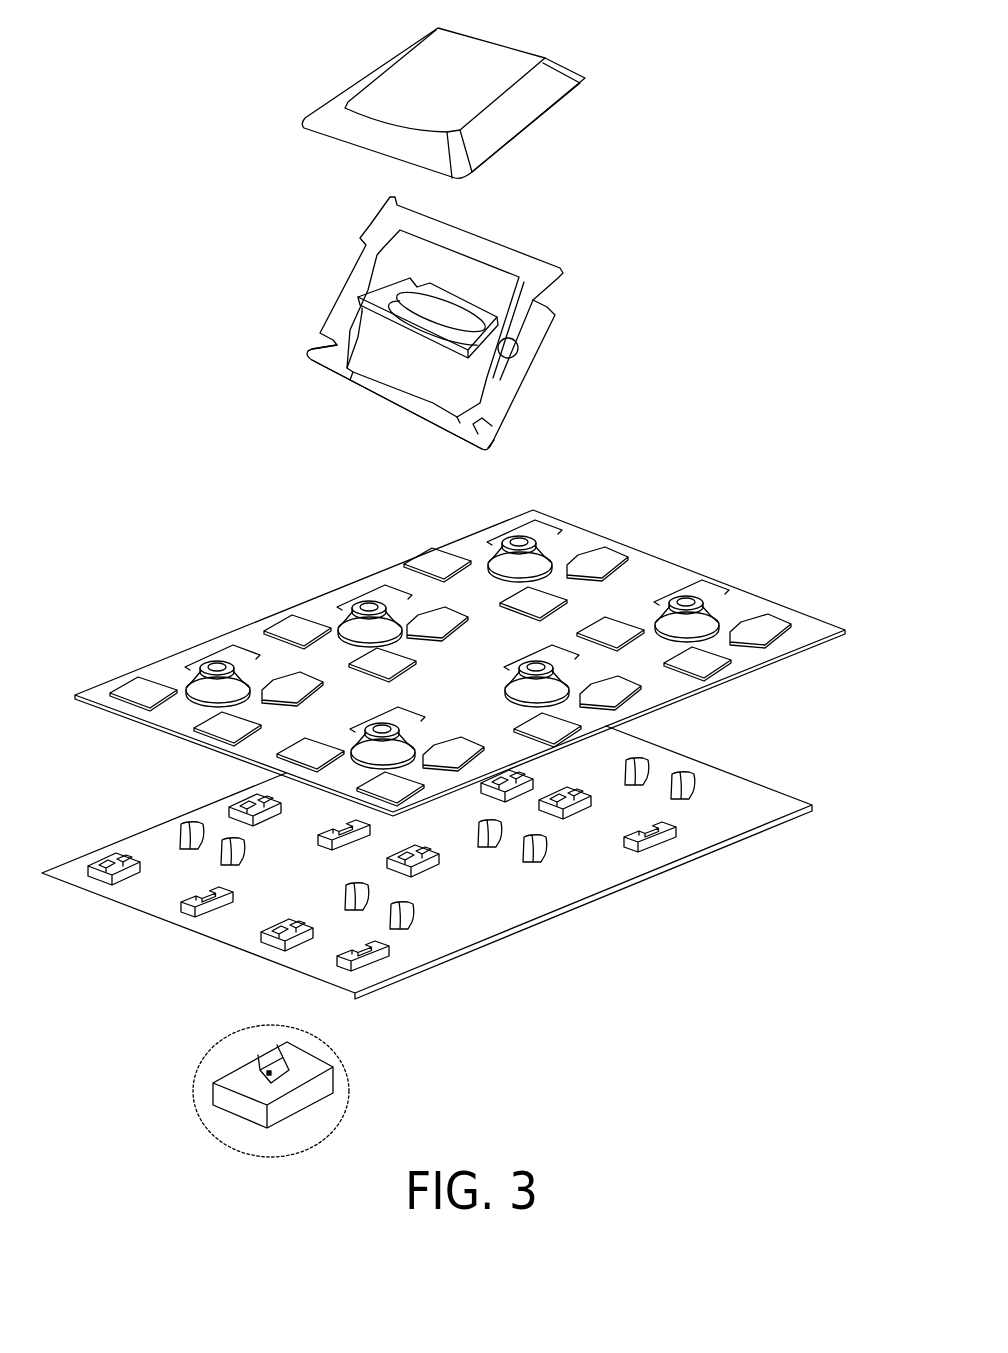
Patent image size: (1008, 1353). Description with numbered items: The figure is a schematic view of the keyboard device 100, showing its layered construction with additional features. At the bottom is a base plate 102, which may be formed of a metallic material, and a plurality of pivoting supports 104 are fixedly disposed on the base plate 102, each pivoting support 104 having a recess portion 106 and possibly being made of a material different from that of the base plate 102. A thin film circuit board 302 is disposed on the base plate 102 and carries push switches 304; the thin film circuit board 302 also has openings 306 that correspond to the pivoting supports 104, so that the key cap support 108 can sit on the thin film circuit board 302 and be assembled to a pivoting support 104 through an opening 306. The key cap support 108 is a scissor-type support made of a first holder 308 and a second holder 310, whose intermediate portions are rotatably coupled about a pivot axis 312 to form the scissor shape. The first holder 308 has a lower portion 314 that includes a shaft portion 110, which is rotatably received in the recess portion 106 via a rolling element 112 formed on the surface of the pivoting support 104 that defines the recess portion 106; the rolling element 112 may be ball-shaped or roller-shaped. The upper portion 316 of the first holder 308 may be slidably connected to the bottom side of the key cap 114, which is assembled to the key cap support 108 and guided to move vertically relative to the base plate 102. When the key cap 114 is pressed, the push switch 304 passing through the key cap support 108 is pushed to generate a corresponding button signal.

The keyboard device 100 is at (461, 833).
The base plate 102 is at (461, 941).
The pivoting support 104 is at (333, 1031).
The recess portion 106 is at (284, 1060).
The key cap support 108 is at (490, 332).
The shaft portion 110 is at (473, 445).
The rolling element 112 is at (283, 1071).
The key cap 114 is at (538, 120).
The thin film circuit board 302 is at (472, 663).
The push switch 304 is at (357, 762).
The opening 306 is at (400, 792).
The first holder 308 is at (515, 390).
The second holder 310 is at (473, 303).
The pivot axis 312 is at (520, 350).
The lower portion 314 is at (365, 410).
The upper portion 316 is at (506, 234).